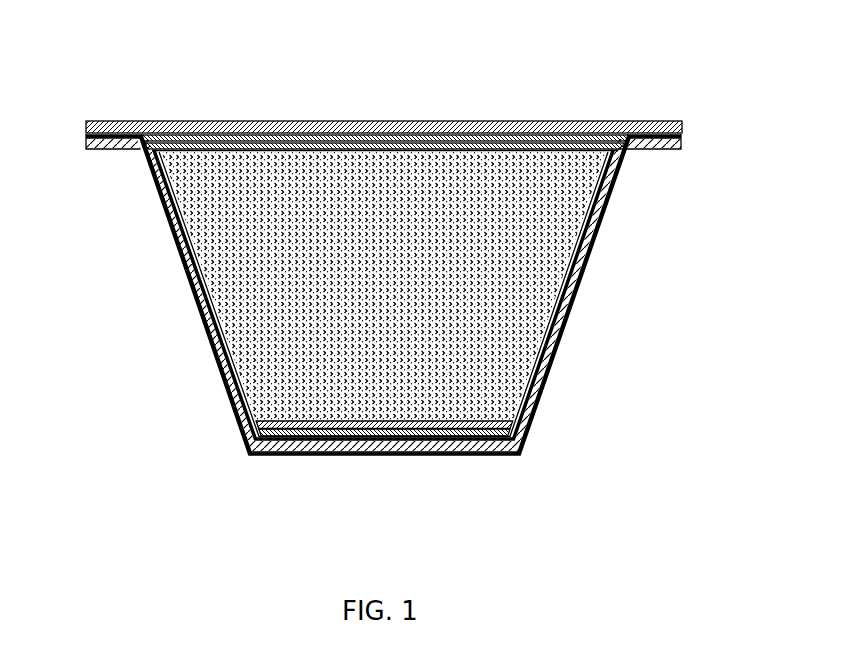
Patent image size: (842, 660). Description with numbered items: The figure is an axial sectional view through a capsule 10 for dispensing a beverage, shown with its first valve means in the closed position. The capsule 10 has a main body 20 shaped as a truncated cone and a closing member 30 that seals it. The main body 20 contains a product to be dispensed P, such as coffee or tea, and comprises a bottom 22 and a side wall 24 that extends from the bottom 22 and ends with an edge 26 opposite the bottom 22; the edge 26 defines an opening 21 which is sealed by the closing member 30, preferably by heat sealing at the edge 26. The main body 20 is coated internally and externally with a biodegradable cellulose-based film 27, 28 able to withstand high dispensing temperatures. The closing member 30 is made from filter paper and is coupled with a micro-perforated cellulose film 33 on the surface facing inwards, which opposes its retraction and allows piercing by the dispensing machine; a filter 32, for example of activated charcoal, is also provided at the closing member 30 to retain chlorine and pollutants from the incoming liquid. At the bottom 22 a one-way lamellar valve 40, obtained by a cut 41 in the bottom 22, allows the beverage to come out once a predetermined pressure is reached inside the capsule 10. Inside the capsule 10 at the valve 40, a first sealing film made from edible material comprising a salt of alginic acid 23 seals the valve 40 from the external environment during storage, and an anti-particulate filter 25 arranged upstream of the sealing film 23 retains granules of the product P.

The capsule 10 is at (397, 282).
The main body 20 is at (389, 337).
The opening 21 is at (345, 148).
The bottom 22 is at (338, 457).
The first sealing film made from edible material comprising at least one salt of alg 23 is at (256, 458).
The side wall 24 is at (162, 230).
The anti-particulate filter 25 is at (520, 458).
The edge 26 is at (128, 145).
The biodegradable cellulose-based film 27 is at (184, 284).
The biodegradable cellulose-based film 28 is at (148, 178).
The closing member 30 is at (303, 124).
The filter 32 is at (537, 142).
The micro-perforated cellulose film 33 is at (452, 138).
The one-way lamellar valve 40 is at (399, 459).
The cut 41 is at (428, 450).
The product to be dispensed P is at (320, 324).